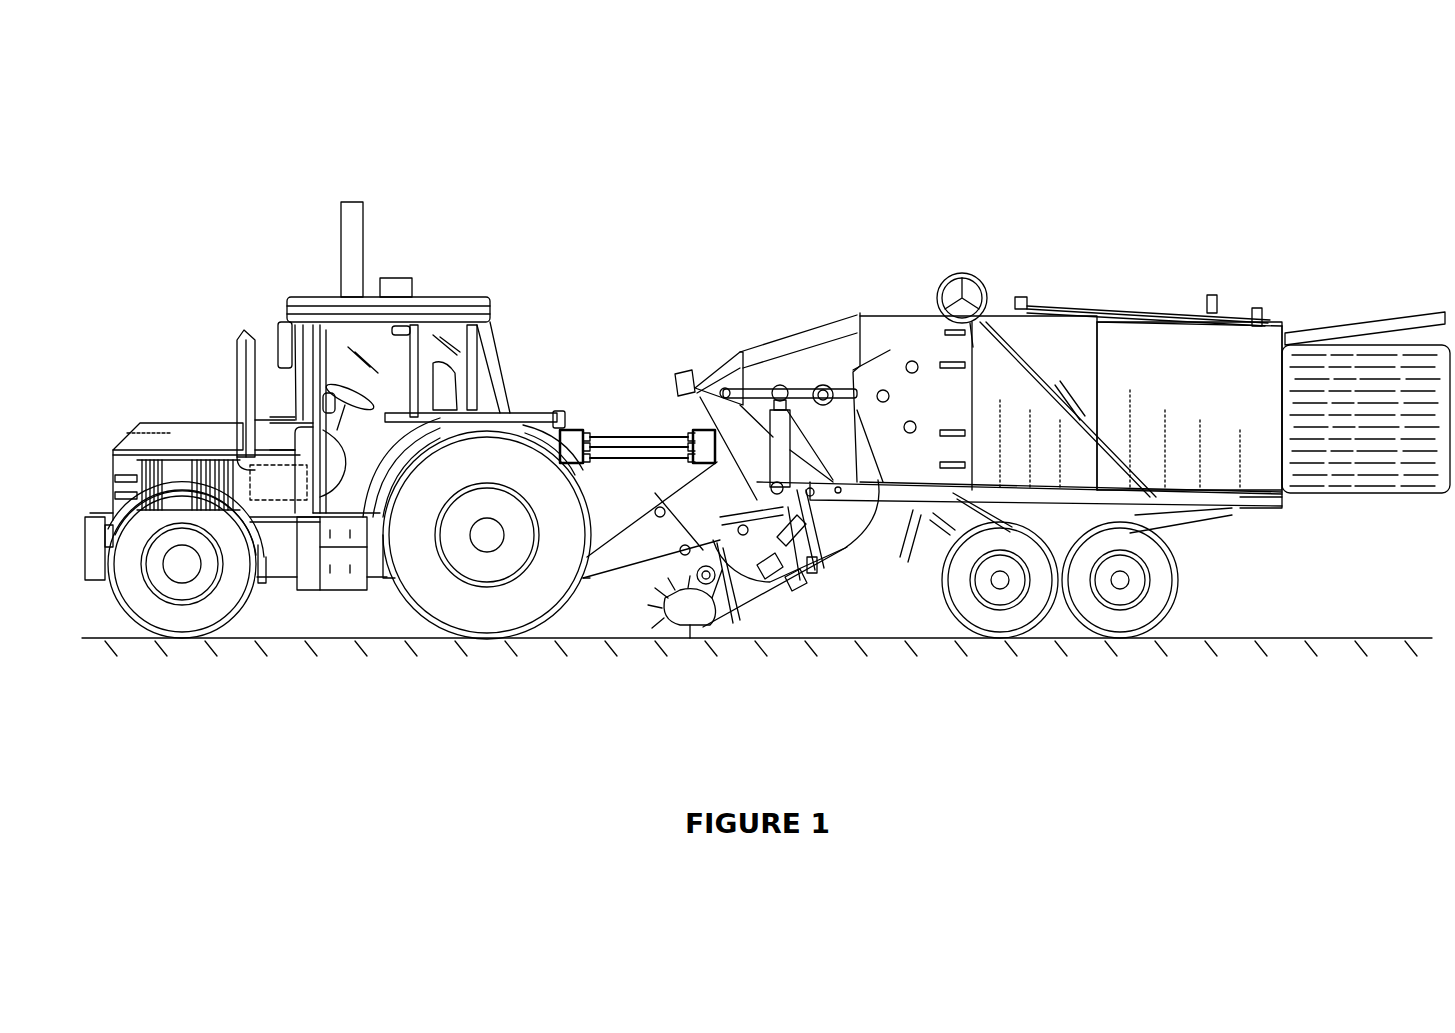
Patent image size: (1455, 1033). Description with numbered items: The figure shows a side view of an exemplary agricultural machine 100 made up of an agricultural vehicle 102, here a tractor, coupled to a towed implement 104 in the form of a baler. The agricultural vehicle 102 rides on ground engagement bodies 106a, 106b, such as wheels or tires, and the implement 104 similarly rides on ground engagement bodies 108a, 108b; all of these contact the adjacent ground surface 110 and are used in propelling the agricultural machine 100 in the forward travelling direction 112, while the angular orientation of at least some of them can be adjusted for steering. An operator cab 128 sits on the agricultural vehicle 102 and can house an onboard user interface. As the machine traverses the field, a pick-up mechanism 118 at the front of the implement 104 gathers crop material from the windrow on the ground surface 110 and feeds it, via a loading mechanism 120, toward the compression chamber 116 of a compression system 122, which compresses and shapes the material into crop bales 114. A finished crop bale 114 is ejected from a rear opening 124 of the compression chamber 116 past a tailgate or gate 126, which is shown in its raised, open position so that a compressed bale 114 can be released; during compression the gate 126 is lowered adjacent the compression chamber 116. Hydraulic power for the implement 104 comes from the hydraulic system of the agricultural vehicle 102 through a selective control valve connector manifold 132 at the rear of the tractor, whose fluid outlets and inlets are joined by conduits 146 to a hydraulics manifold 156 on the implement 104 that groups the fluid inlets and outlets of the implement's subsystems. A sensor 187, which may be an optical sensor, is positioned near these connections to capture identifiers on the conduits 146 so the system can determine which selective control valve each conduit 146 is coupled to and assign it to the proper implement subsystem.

The agricultural machine 100 is at (735, 124).
The agricultural vehicle 102 is at (540, 284).
The implement 104 is at (1046, 242).
The ground engagement body 106a is at (205, 624).
The ground engagement body 106b is at (462, 640).
The ground engagement body 108a is at (1010, 637).
The ground engagement body 108b is at (1135, 627).
The ground surface 110 is at (470, 613).
The forward operating or travelling direction 112 is at (170, 351).
The crop bale 114 is at (1425, 495).
The compression chamber 116 is at (1147, 355).
The pick-up mechanism 118 is at (668, 645).
The loading mechanism 120 is at (845, 583).
The compression system 122 is at (1082, 296).
The rear opening 124 is at (1282, 497).
The gate 126 is at (1337, 330).
The operator cab 128 is at (433, 335).
The selective control valve connector manifold 132 is at (572, 429).
The conduit 146 is at (628, 438).
The hydraulics manifold 156 is at (693, 427).
The sensor 187 is at (684, 372).